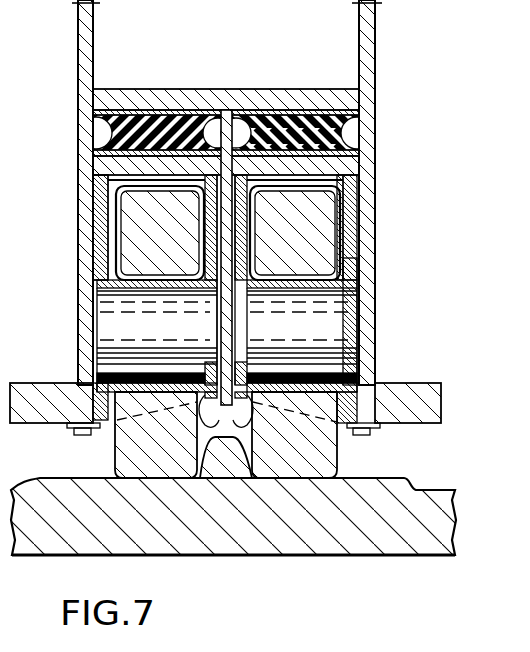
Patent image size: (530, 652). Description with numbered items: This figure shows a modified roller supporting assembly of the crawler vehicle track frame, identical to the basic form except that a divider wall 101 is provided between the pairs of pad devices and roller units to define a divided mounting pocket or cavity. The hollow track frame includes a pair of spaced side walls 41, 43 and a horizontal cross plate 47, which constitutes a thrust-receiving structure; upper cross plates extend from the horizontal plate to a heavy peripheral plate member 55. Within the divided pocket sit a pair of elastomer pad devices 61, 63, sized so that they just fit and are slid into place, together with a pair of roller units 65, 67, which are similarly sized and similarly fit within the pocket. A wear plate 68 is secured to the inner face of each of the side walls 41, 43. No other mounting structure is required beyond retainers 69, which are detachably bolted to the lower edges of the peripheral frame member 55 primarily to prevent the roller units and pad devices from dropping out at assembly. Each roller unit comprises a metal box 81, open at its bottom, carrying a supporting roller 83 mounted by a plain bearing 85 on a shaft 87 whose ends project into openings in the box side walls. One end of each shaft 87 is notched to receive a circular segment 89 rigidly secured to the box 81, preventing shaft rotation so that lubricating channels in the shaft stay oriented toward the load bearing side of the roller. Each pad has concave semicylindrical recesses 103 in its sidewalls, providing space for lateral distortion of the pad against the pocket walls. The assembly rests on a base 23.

The base 23 is at (428, 478).
The side wall 41 is at (78, 25).
The side wall 43 is at (375, 50).
The horizontal cross plate 47 is at (115, 88).
The peripheral plate member 55 is at (30, 383).
The elastomer pad device 61 is at (163, 113).
The elastomer pad device 63 is at (294, 113).
The roller unit 65 is at (100, 273).
The roller unit 67 is at (347, 268).
The wear plate 68 is at (90, 250).
The retainer 69 is at (78, 435).
The metal box 81 is at (100, 225).
The supporting roller 83 is at (132, 212).
The plain bearing 85 is at (150, 288).
The shaft 87 is at (115, 326).
The circular segment 89 is at (226, 435).
The divider wall 101 is at (222, 190).
The concave semicylindrical recess 103 is at (247, 118).